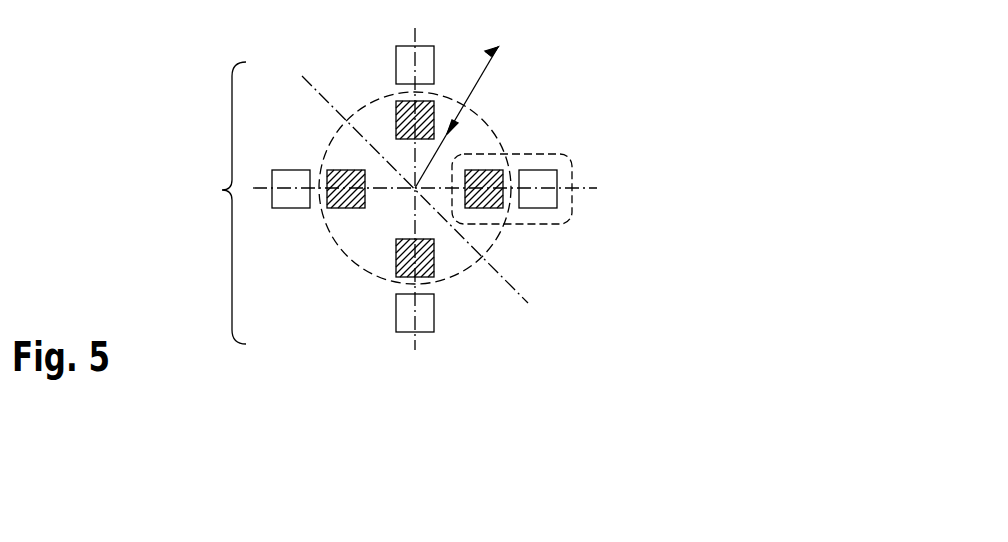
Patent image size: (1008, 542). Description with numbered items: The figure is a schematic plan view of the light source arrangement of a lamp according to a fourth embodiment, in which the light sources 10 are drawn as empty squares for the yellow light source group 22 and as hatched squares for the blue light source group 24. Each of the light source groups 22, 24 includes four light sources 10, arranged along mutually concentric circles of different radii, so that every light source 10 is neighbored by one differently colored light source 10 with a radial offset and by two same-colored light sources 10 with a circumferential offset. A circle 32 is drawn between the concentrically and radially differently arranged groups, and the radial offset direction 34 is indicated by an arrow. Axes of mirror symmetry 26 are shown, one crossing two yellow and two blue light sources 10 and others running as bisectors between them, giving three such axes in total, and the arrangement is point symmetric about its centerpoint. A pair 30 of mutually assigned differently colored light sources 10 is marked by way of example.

The light sources 10 is at (219, 203).
The yellow light source group 22 is at (323, 131).
The blue light source group 24 is at (362, 163).
The axis of mirror symmetry 26 is at (416, 42).
The pair of differently colored light sources 30 is at (520, 155).
The circle between light source groups 32 is at (362, 268).
The radial offset direction 34 is at (476, 85).